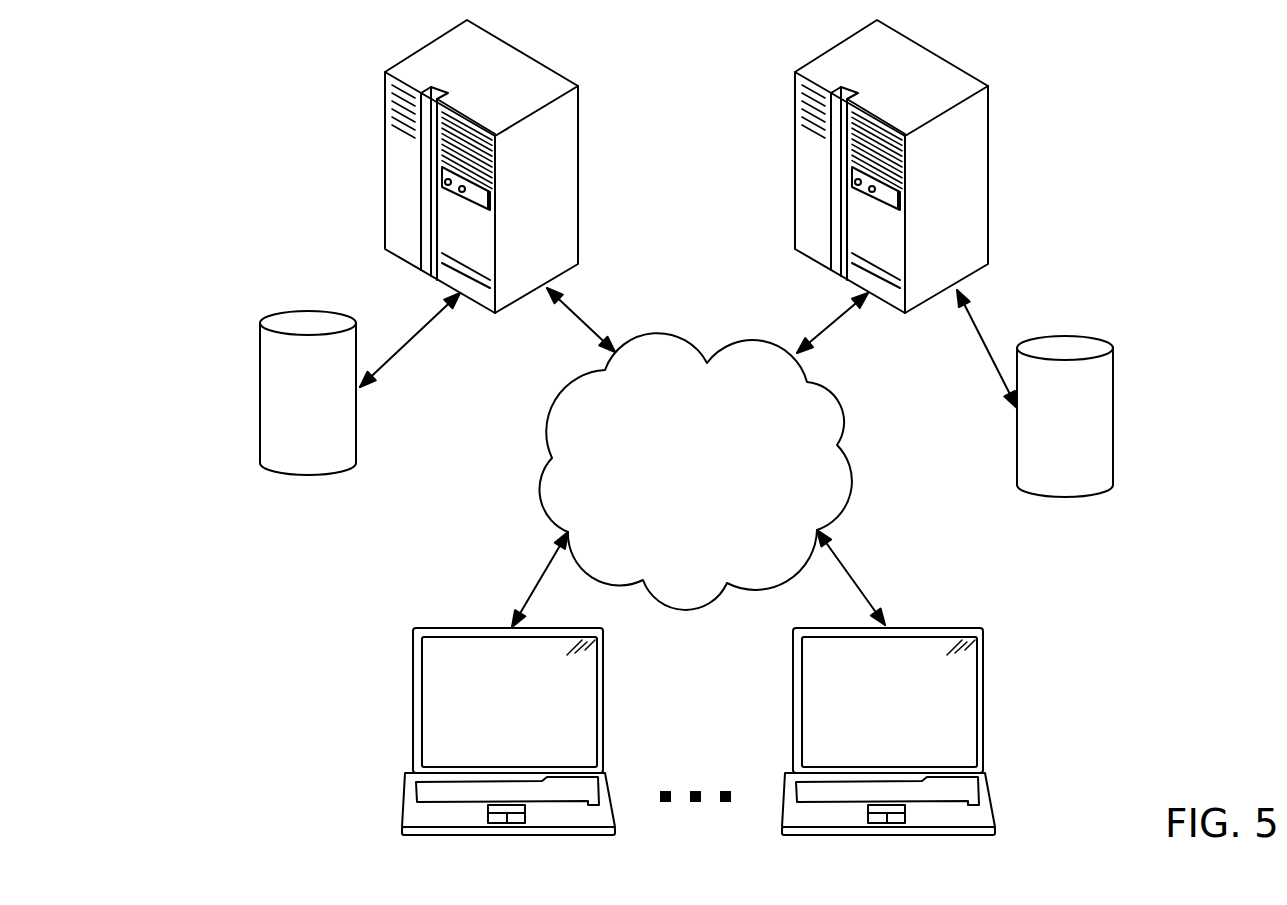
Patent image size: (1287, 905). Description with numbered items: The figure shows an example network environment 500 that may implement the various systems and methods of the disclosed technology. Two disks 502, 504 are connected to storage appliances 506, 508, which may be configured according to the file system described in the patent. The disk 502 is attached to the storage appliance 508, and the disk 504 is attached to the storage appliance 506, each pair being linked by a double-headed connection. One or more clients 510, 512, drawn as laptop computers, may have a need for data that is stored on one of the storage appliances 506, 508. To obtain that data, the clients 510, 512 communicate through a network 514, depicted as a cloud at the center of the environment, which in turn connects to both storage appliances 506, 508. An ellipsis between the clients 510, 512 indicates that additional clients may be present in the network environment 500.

The network environment 500 is at (232, 227).
The disk 502 is at (260, 393).
The disk 504 is at (1113, 413).
The storage appliance 506 is at (988, 152).
The storage appliance 508 is at (385, 153).
The client 510 is at (413, 693).
The client 512 is at (985, 682).
The network 514 is at (695, 471).